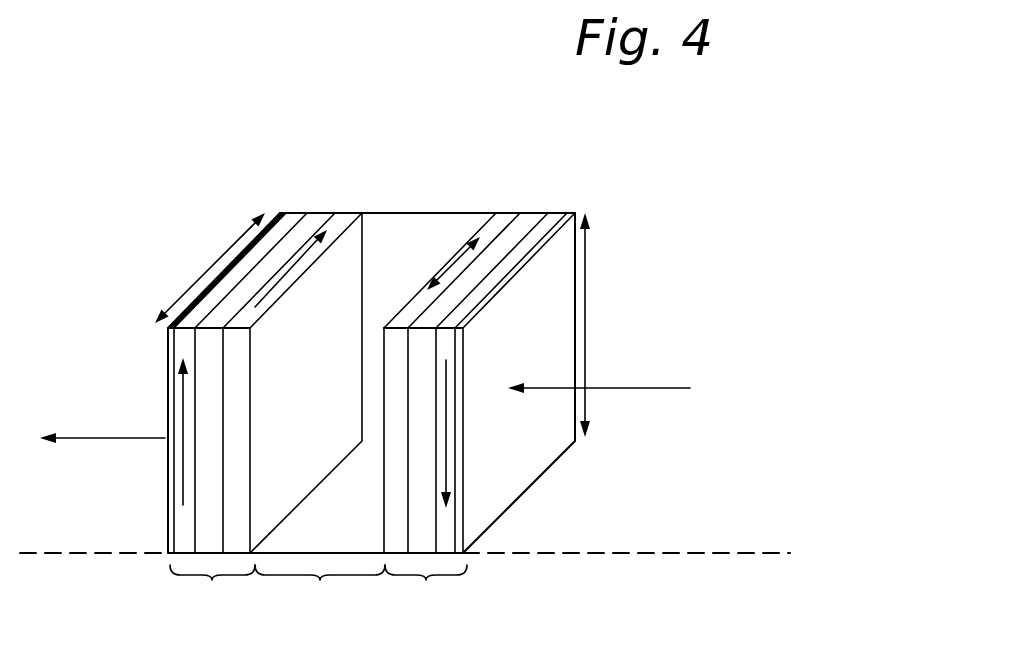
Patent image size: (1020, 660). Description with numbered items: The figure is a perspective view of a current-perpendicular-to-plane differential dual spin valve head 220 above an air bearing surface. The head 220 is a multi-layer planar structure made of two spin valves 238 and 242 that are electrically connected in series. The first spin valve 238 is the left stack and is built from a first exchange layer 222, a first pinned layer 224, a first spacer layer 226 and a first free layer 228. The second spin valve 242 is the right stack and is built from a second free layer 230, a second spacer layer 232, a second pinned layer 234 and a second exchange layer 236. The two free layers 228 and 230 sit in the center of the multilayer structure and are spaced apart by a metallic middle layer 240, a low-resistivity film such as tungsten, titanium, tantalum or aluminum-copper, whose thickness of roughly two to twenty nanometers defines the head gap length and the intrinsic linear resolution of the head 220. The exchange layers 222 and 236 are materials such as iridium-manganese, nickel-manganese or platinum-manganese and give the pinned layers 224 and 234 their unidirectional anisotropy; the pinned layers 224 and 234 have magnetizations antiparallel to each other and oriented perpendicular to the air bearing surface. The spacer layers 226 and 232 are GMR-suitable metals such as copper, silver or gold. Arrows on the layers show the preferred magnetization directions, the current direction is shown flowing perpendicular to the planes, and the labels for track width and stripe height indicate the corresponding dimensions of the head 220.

The CPP differential dual spin valve head 220 is at (170, 199).
The first exchange layer 222 is at (170, 517).
The first pinned layer 224 is at (215, 293).
The first spacer layer 226 is at (307, 212).
The first free layer 228 is at (340, 212).
The second free layer 230 is at (503, 212).
The second spacer layer 232 is at (537, 210).
The second pinned layer 234 is at (555, 212).
The second exchange layer 236 is at (547, 472).
The first spin valve 238 is at (212, 589).
The metallic middle layer 240 is at (320, 605).
The second spin valve 242 is at (426, 589).